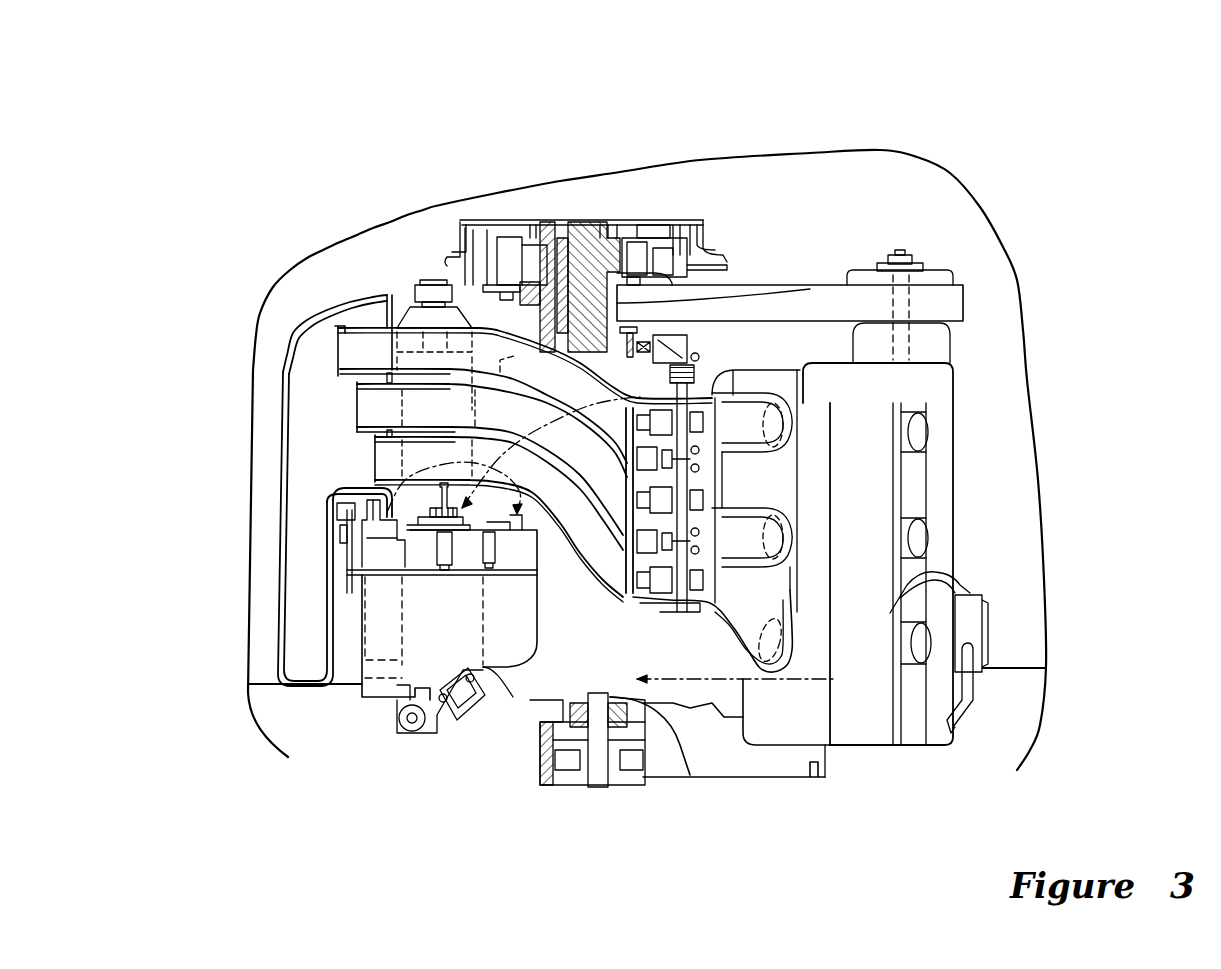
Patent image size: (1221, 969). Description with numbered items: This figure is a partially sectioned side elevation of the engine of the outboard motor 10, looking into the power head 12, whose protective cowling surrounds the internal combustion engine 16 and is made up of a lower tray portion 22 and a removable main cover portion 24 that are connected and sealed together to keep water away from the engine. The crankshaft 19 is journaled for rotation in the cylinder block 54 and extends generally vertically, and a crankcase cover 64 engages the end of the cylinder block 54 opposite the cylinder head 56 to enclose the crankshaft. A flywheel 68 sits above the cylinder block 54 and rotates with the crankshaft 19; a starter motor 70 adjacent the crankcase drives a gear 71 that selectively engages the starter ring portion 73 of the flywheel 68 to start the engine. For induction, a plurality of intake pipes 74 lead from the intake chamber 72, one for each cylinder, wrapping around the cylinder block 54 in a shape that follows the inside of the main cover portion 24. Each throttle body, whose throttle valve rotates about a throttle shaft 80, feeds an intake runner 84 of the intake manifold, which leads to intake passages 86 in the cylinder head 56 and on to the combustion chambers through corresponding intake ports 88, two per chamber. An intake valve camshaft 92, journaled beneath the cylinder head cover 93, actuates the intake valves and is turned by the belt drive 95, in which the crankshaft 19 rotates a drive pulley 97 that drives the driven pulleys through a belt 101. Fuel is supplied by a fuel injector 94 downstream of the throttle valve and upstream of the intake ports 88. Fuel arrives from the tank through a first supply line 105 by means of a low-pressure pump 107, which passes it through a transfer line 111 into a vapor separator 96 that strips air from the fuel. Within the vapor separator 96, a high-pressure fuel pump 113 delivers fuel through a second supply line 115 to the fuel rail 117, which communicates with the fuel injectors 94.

The outboard motor 10 is at (1042, 135).
The power head 12 is at (1107, 140).
The internal combustion engine 16 is at (958, 470).
The crankshaft 19 is at (587, 223).
The lower tray portion 22 is at (1048, 706).
The main cover portion 24 is at (1013, 258).
The cylinder block 54 is at (687, 700).
The cylinder head 56 is at (790, 730).
The crankcase cover 64 is at (513, 697).
The flywheel 68 is at (690, 222).
The starter motor 70 is at (410, 312).
The gear 71 is at (427, 307).
The intake chamber 72 is at (283, 425).
The starter ring portion 73 is at (447, 262).
The intake pipes 74 is at (413, 313).
The throttle shaft 80 is at (732, 634).
The intake runner 84 is at (722, 690).
The intake passages 86 is at (750, 392).
The intake ports 88 is at (790, 563).
The intake valve camshaft 92 is at (907, 340).
The cylinder head cover 93 is at (883, 730).
The fuel injector 94 is at (655, 600).
The belt drive 95 is at (740, 283).
The vapor separator 96 is at (382, 693).
The drive pulley 97 is at (937, 273).
The belt 101 is at (817, 297).
The first supply line 105 is at (977, 705).
The low-pressure pump 107 is at (990, 633).
The transfer line 111 is at (833, 677).
The high-pressure fuel pump 113 is at (352, 650).
The second supply line 115 is at (430, 470).
The fuel rail 117 is at (537, 527).